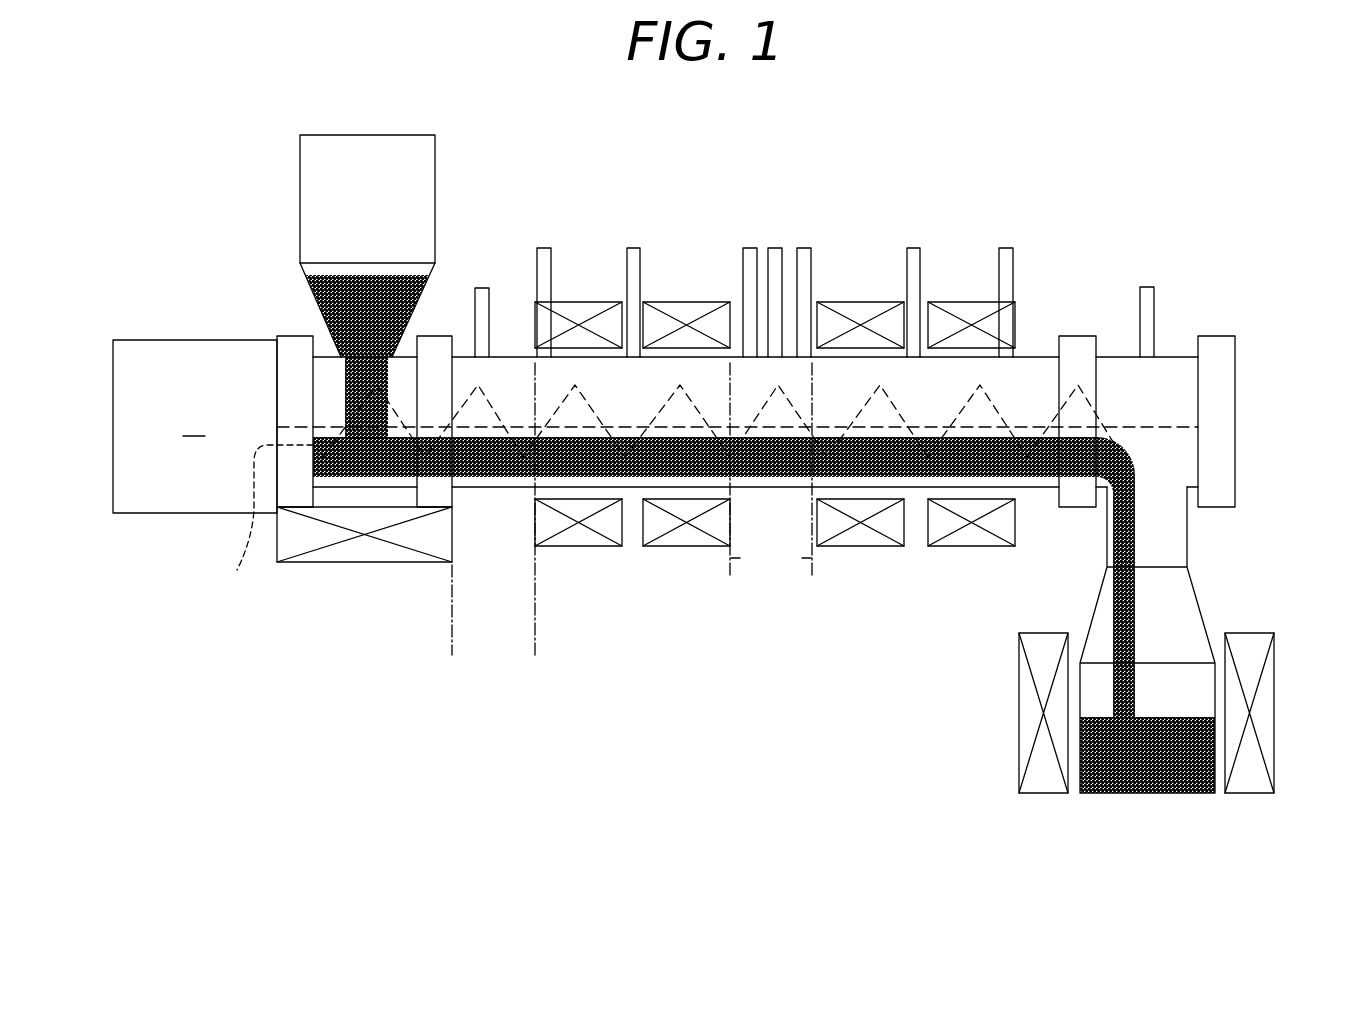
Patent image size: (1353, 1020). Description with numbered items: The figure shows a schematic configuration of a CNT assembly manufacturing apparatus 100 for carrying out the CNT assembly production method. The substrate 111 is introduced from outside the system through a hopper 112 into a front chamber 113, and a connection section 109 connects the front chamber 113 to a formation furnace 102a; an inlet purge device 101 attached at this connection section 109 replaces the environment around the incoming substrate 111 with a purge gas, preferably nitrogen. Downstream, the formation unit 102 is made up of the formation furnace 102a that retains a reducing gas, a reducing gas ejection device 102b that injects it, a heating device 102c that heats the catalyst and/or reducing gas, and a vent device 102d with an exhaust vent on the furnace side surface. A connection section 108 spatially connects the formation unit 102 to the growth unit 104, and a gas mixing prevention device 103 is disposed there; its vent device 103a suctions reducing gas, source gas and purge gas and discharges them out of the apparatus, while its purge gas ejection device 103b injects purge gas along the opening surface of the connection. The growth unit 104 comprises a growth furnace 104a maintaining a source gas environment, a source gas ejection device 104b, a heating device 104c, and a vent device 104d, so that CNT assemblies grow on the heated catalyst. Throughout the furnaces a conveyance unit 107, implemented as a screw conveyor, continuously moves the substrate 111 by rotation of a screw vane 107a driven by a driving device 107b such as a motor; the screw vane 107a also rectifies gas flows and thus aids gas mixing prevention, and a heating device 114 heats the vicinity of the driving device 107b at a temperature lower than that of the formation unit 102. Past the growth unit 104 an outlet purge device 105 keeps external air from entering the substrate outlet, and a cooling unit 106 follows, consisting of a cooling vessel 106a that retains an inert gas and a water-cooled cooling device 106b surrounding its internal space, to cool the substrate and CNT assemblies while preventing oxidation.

The CNT assembly manufacturing apparatus 100 is at (1108, 170).
The inlet purge device 101 is at (482, 288).
The formation unit 102 is at (591, 428).
The formation furnace 102a is at (680, 598).
The reducing gas ejection device 102b is at (632, 248).
The heating device 102c is at (583, 302).
The vent device 102d is at (545, 248).
The gas mixing prevention device 103 is at (779, 249).
The vent device 103a is at (748, 248).
The purge gas ejection device 103b is at (775, 270).
The growth unit 104 is at (882, 421).
The growth furnace 104a is at (857, 490).
The source gas ejection device 104b is at (913, 248).
The heating device 104c is at (860, 302).
The vent device 104d is at (1005, 248).
The outlet purge device 105 is at (1146, 287).
The cooling unit 106 is at (1146, 671).
The cooling vessel 106a is at (1195, 592).
The water-cooled cooling device 106b is at (1247, 633).
The conveyance unit 107 is at (213, 491).
The screw vane 107a is at (261, 522).
The driving device 107b is at (158, 513).
The connection section 108 is at (740, 558).
The connection section 109 is at (525, 645).
The substrate 111 is at (372, 300).
The hopper 112 is at (300, 168).
The front chamber 113 is at (331, 356).
The heating device 114 is at (368, 565).